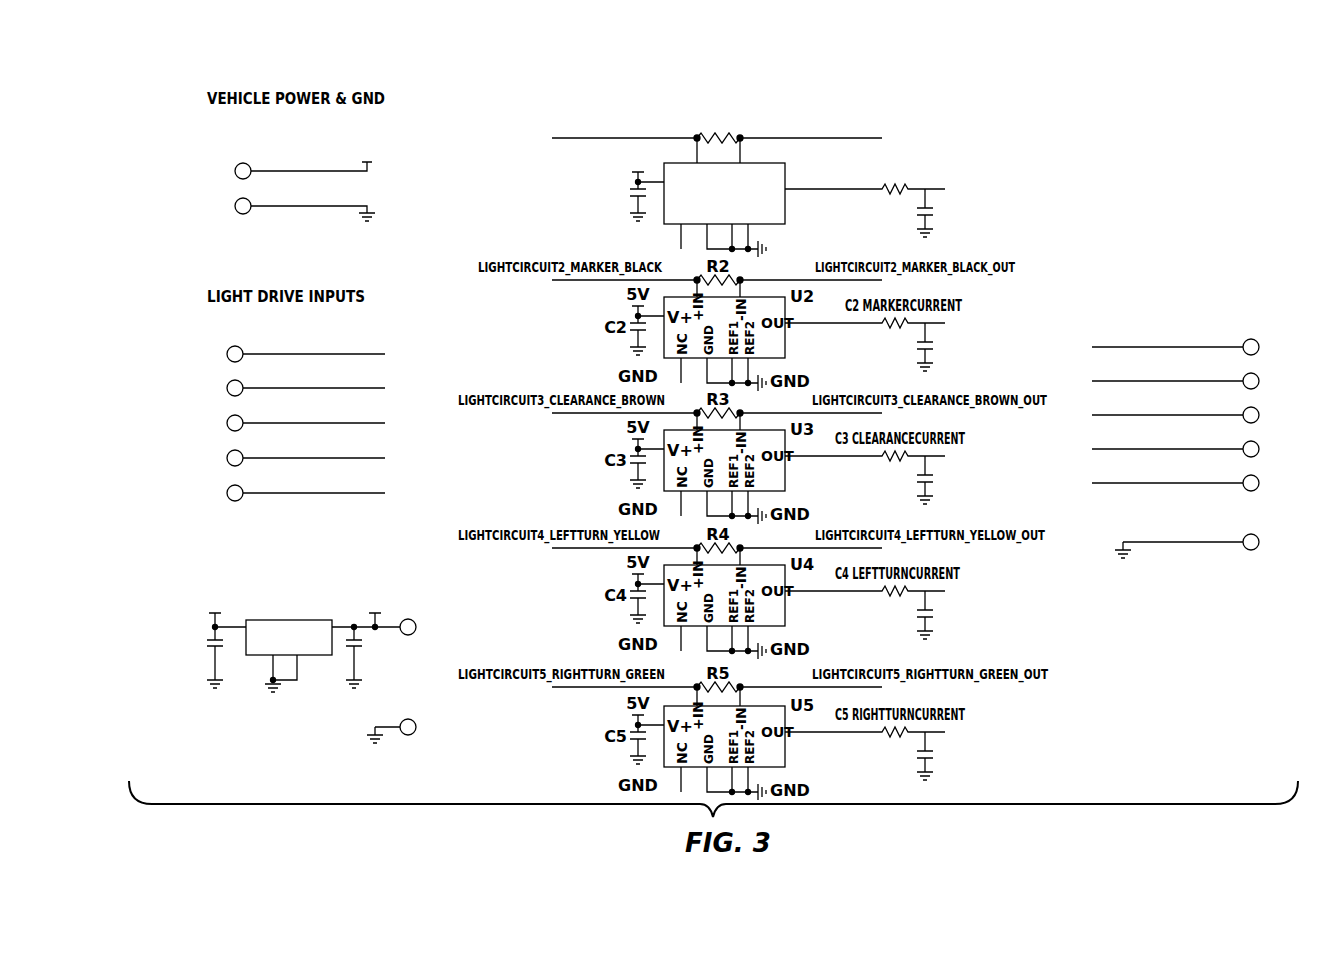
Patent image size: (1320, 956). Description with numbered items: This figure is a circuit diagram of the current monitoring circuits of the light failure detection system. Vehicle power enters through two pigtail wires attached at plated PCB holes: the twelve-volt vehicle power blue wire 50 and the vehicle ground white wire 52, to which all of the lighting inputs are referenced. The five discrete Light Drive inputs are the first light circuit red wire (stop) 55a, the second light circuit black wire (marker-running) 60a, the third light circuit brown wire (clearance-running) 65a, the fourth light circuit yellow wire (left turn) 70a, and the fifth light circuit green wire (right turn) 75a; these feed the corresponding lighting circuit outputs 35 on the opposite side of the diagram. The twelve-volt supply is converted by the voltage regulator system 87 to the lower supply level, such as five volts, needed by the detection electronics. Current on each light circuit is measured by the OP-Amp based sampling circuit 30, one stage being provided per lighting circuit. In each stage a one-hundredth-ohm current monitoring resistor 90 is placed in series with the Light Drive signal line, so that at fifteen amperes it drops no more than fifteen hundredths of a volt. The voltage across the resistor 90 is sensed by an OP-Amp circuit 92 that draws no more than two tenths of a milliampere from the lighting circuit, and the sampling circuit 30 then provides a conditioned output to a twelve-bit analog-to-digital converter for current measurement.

The OP-Amp based sampling circuit 30 is at (863, 97).
The light drive outputs connector 35 is at (1258, 327).
The 12 VDC vehicle power blue wire 50 is at (318, 148).
The vehicle ground white wire 52 is at (337, 207).
The Light Circuit 1 input red wire (stop) 55a is at (378, 330).
The Light Circuit 2 input black wire (marker-running) 60a is at (410, 370).
The Light Circuit 3 input brown wire (clearance-running) 65a is at (443, 408).
The Light Circuit 4 input yellow wire (left turn) 70a is at (442, 439).
The Light Circuit 5 input green wire (right turn) 75a is at (443, 475).
The voltage regulator system 87 is at (192, 617).
The current monitoring resistor 90 is at (742, 136).
The OP-Amp circuit 92 is at (785, 213).